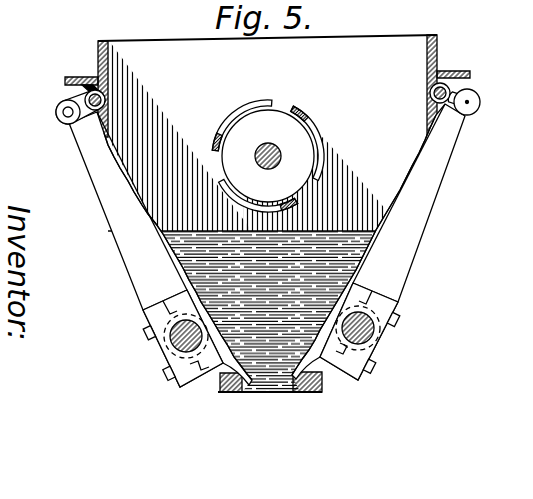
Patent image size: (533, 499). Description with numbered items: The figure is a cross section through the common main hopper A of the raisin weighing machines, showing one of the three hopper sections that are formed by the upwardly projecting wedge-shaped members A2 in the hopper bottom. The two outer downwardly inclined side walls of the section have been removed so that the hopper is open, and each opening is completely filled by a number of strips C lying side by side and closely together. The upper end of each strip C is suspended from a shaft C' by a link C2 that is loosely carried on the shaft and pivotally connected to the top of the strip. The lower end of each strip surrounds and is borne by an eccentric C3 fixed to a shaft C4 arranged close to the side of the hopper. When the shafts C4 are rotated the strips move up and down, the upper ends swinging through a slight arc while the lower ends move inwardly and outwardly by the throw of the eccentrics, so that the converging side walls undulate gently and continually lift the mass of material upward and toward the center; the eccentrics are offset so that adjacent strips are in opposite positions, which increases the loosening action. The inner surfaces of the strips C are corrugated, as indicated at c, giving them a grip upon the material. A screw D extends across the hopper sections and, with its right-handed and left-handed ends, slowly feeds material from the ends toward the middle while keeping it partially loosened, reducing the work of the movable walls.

The hopper A is at (437, 58).
The wedge-shaped member A2 is at (347, 243).
The screw D is at (273, 113).
The strip C is at (269, 245).
The corrugation c is at (150, 210).
The shaft C' is at (273, 126).
The link C2 is at (508, 87).
The eccentric C3 is at (398, 327).
The shaft C4 is at (410, 364).